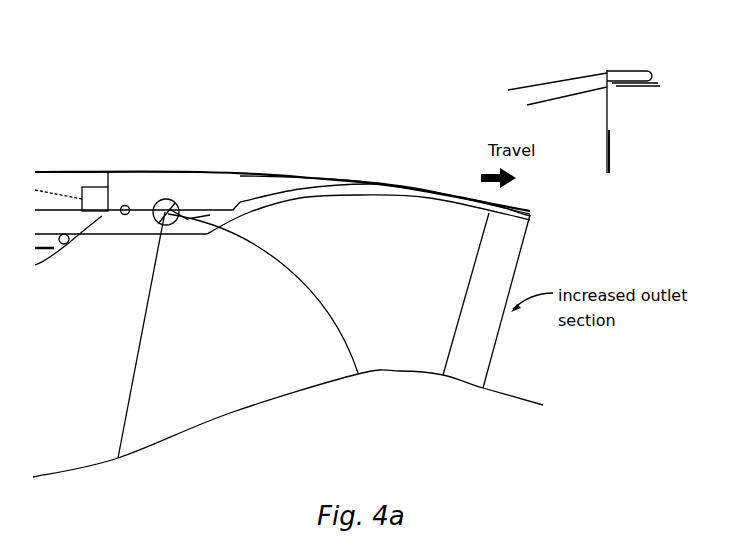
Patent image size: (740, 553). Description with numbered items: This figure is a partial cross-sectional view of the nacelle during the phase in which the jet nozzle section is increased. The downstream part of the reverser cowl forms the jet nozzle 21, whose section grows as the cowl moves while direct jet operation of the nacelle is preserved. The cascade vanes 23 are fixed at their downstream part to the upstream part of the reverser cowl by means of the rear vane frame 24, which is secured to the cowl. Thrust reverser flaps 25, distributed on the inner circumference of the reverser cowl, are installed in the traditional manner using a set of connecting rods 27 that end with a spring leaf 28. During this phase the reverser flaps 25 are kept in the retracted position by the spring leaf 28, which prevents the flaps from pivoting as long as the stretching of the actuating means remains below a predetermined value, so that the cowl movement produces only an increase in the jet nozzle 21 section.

The jet nozzle 21 is at (402, 186).
The cascade vanes 23 is at (55, 189).
The rear vane frame 24 is at (97, 185).
The thrust reverser flaps 25 is at (124, 237).
The connecting rods 27 is at (139, 316).
The spring leaf 28 is at (632, 66).